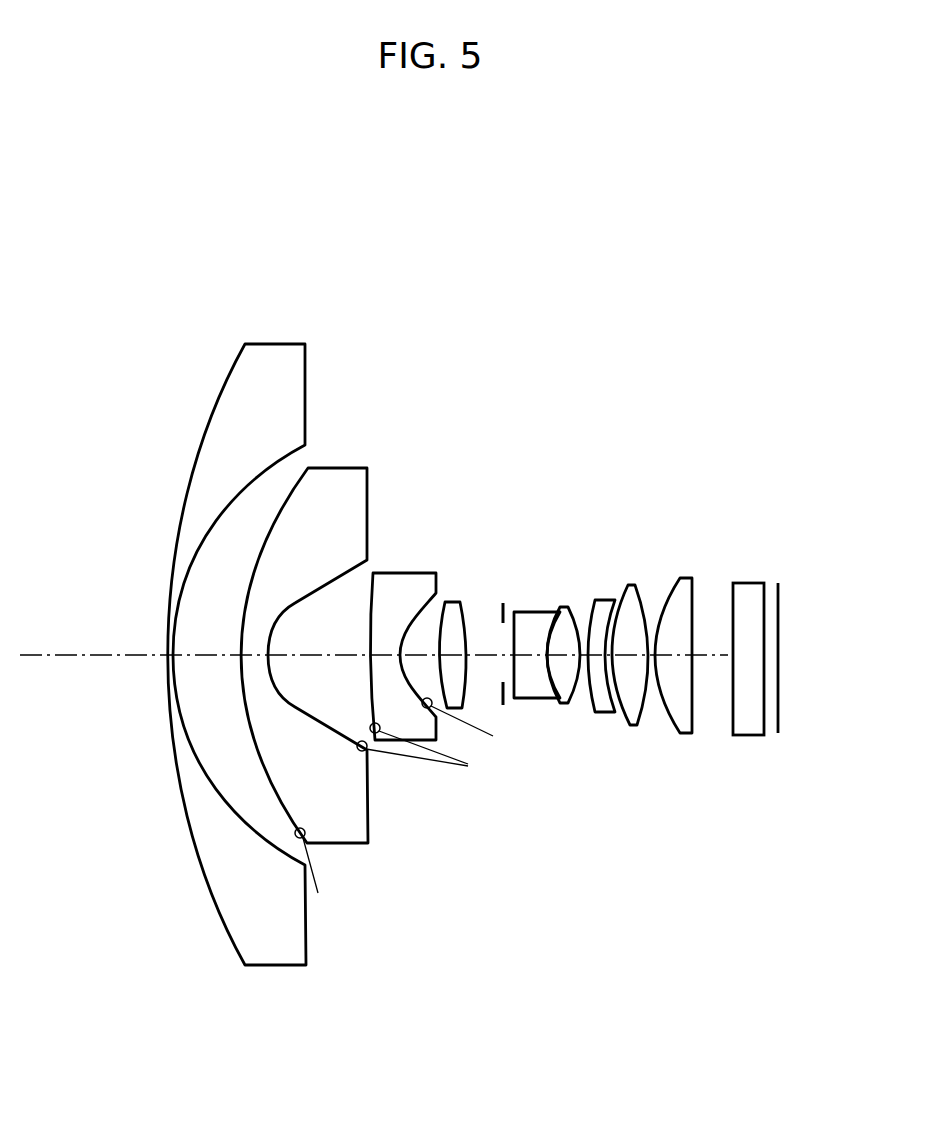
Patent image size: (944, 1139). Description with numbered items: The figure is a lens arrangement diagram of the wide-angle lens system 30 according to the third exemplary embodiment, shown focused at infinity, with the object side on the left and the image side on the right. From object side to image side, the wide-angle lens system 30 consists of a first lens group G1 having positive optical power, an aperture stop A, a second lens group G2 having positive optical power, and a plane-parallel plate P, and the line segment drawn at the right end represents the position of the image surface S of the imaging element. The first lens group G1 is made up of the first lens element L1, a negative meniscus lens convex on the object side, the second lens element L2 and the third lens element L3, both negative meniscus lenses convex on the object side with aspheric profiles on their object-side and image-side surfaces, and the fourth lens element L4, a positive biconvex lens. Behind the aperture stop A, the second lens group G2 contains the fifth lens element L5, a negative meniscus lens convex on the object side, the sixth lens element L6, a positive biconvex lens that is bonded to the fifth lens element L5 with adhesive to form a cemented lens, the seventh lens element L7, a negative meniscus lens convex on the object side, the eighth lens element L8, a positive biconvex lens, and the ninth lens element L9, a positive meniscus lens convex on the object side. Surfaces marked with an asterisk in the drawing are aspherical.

The wide-angle lens system 30 is at (95, 280).
The first lens group G1 is at (475, 212).
The second lens group G2 is at (513, 212).
The first lens element L1 is at (270, 353).
The second lens element L2 is at (333, 478).
The third lens element L3 is at (402, 578).
The fourth lens element L4 is at (452, 610).
The fifth lens element L5 is at (533, 620).
The sixth lens element L6 is at (565, 620).
The seventh lens element L7 is at (605, 607).
The eighth lens element L8 is at (635, 590).
The ninth lens element L9 is at (683, 585).
The aperture stop A is at (503, 603).
The plane-parallel plate P is at (747, 583).
The image surface S is at (778, 632).